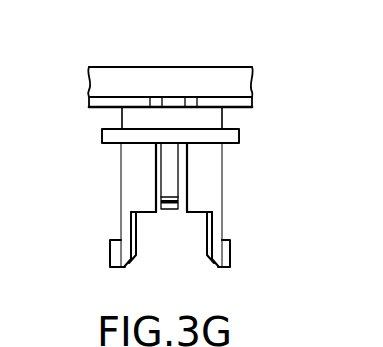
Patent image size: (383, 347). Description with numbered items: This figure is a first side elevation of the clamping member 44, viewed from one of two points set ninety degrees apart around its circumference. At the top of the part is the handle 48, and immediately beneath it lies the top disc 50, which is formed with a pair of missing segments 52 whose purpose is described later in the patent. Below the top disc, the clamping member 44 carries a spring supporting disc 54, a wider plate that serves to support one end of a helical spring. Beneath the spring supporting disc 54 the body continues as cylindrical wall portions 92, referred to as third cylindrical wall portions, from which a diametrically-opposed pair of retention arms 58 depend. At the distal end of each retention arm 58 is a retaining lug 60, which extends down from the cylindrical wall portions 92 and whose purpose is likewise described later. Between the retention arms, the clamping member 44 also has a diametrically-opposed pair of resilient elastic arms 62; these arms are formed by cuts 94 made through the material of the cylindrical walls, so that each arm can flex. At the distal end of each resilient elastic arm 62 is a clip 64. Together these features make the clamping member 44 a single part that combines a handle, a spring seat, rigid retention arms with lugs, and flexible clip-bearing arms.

The clamping member 44 is at (209, 228).
The handle 48 is at (230, 80).
The top disc 50 is at (96, 107).
The missing segments 52 is at (175, 97).
The spring supporting disc 54 is at (227, 136).
The retention arms 58 is at (121, 228).
The retaining lug 60 is at (110, 258).
The resilient elastic arms 62 is at (168, 174).
The clip 64 is at (172, 215).
The third cylindrical wall portions 92 is at (135, 197).
The cuts 94 is at (157, 215).